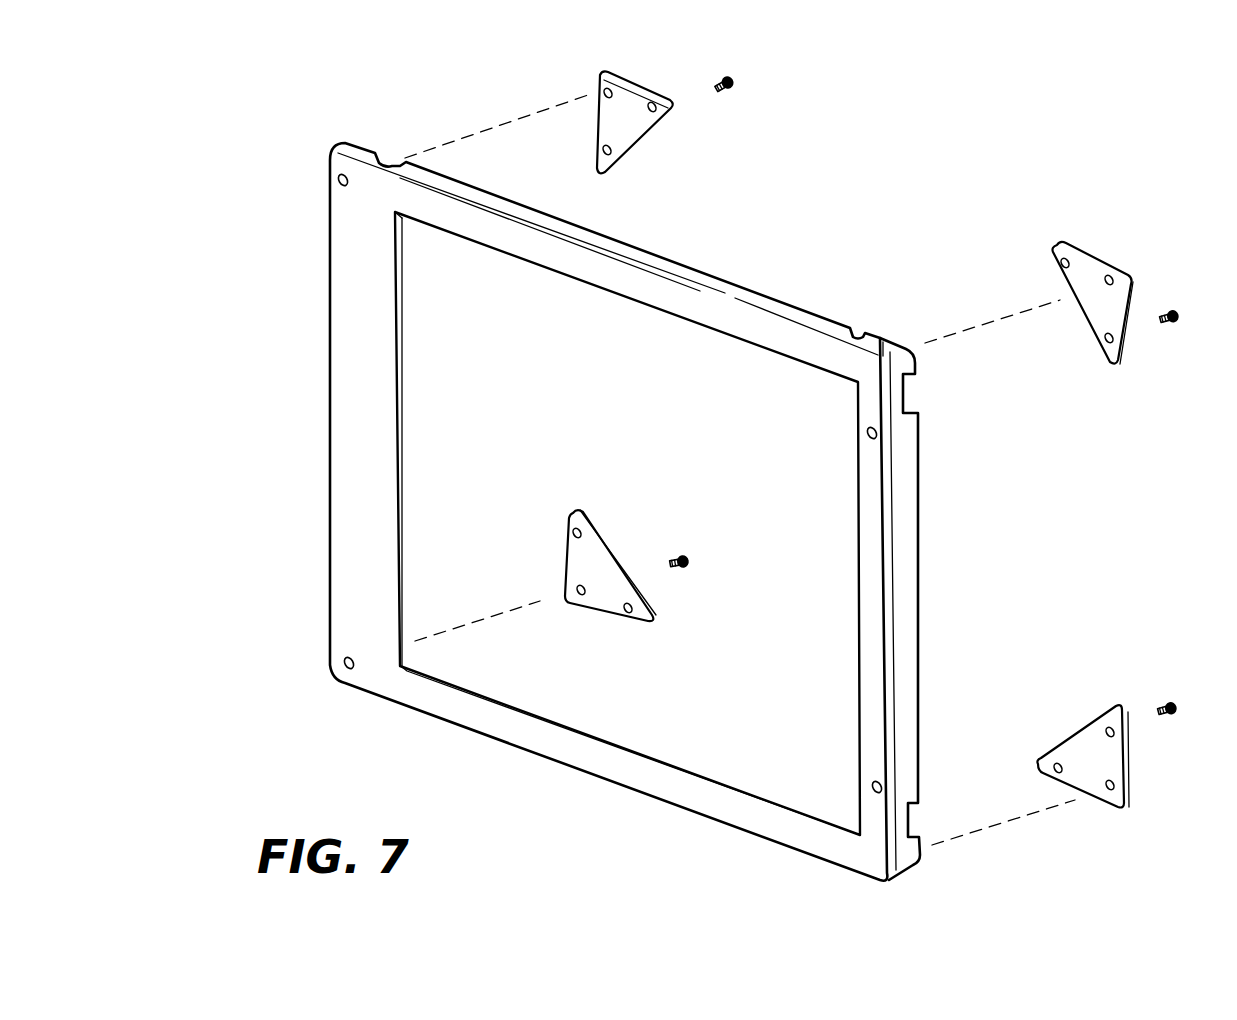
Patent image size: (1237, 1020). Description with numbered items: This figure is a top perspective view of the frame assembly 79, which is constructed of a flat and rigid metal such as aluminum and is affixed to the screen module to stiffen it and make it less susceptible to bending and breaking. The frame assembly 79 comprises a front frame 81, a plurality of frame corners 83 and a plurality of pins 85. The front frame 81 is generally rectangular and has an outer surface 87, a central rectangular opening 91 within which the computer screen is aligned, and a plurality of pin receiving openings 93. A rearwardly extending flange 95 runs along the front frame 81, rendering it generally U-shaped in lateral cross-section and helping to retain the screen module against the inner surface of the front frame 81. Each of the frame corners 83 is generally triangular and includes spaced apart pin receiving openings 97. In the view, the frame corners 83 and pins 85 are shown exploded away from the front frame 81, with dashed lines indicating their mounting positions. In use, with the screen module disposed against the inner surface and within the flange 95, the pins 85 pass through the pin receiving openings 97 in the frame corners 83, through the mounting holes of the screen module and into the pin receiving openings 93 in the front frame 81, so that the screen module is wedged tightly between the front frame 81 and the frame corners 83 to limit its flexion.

The frame assembly 79 is at (978, 857).
The front frame 81 is at (873, 850).
The frame corners 83 is at (640, 138).
The pins 85 is at (729, 90).
The outer surface 87 is at (695, 785).
The central rectangular opening 91 is at (540, 680).
The pin receiving openings 93 is at (335, 184).
The rearwardly extending flange 95 is at (905, 573).
The pin receiving openings 97 is at (1108, 342).